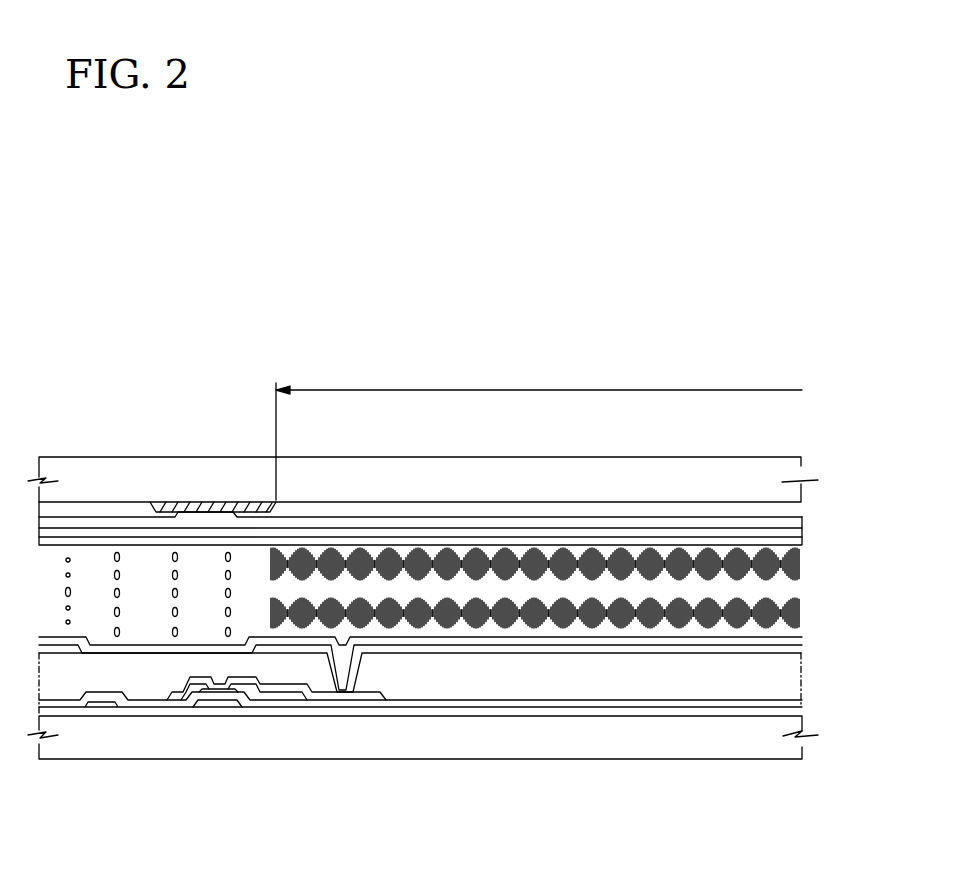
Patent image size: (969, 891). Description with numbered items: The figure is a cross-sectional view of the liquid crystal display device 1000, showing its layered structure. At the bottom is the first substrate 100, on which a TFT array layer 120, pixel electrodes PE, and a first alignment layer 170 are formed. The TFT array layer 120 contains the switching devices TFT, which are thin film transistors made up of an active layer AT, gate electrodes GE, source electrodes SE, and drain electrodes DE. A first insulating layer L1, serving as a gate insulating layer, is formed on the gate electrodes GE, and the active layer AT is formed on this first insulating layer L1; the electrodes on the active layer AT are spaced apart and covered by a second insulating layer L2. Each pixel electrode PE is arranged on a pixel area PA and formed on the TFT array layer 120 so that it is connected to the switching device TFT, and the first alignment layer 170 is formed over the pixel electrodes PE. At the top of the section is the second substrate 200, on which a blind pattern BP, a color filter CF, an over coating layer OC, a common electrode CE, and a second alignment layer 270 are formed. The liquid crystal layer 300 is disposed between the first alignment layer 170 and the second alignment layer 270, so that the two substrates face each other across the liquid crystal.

The liquid crystal display device 1000 is at (733, 329).
The second substrate 200 is at (787, 472).
The pixel area PA is at (539, 432).
The blind pattern BP is at (188, 505).
The color filter CF is at (556, 512).
The over coating layer OC is at (622, 527).
The common electrode CE is at (677, 537).
The second alignment layer 270 is at (740, 545).
The liquid crystal layer 300 is at (805, 547).
The first alignment layer 170 is at (730, 638).
The pixel electrode PE is at (658, 646).
The TFT array layer 120 is at (805, 652).
The switching device TFT is at (298, 805).
The source electrode SE is at (188, 692).
The gate electrode GE is at (216, 704).
The drain electrode DE is at (243, 690).
The active layer AT is at (265, 703).
The first insulating layer L1 is at (365, 712).
The second insulating layer L2 is at (420, 704).
The first substrate 100 is at (790, 750).